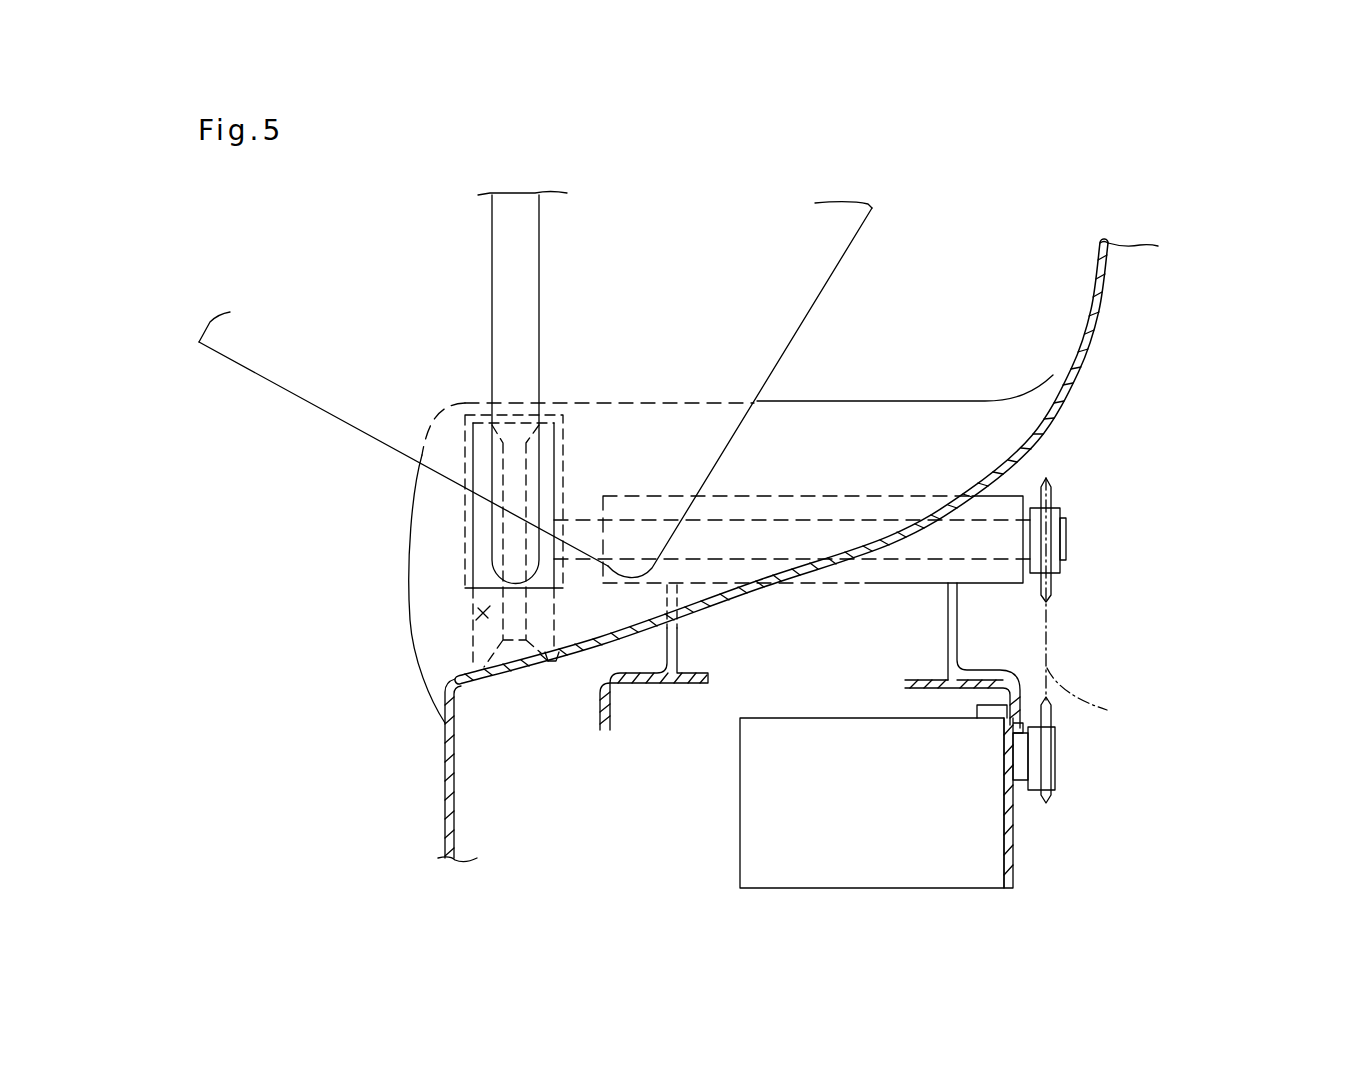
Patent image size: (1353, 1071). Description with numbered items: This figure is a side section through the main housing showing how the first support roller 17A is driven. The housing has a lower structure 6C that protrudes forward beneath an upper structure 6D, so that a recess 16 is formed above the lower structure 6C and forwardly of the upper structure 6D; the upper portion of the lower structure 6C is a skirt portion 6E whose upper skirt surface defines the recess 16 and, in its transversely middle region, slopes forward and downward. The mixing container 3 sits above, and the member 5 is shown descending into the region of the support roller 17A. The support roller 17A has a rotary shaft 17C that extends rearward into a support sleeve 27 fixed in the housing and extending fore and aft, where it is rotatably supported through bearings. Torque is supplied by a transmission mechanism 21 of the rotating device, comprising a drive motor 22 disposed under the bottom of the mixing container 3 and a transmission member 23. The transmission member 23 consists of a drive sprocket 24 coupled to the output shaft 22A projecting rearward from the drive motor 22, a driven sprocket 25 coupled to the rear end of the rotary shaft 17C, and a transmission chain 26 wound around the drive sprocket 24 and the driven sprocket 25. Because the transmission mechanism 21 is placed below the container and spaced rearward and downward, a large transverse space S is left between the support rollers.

The mixing container 3 is at (352, 390).
The column 5 is at (522, 330).
The recess 16 is at (893, 326).
The first support roller 17A is at (472, 553).
The rotary shaft 17C is at (1067, 540).
The transverse space S is at (472, 625).
The lower structure 6C is at (445, 795).
The upper structure 6D is at (1098, 268).
The skirt portion 6E is at (690, 612).
The support sleeve 27 is at (886, 585).
The driven sprocket 25 is at (1050, 478).
The transmission chain 26 is at (1095, 700).
The transmission member 23 is at (1090, 646).
The transmission mechanism 21 is at (1193, 772).
The drive motor 22 is at (897, 816).
The output shaft 22A is at (1020, 795).
The drive sprocket 24 is at (1057, 790).